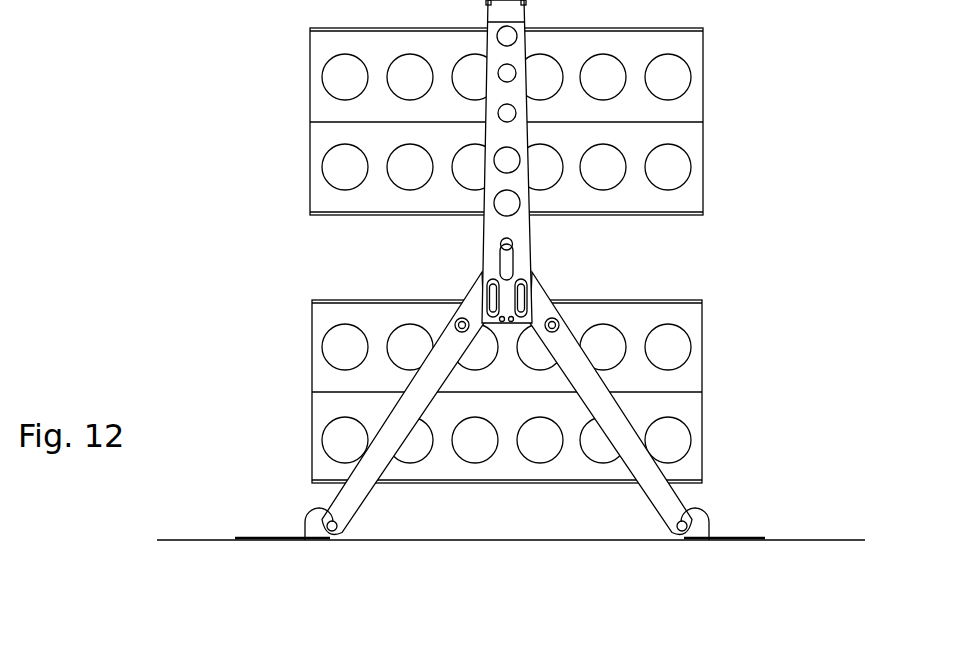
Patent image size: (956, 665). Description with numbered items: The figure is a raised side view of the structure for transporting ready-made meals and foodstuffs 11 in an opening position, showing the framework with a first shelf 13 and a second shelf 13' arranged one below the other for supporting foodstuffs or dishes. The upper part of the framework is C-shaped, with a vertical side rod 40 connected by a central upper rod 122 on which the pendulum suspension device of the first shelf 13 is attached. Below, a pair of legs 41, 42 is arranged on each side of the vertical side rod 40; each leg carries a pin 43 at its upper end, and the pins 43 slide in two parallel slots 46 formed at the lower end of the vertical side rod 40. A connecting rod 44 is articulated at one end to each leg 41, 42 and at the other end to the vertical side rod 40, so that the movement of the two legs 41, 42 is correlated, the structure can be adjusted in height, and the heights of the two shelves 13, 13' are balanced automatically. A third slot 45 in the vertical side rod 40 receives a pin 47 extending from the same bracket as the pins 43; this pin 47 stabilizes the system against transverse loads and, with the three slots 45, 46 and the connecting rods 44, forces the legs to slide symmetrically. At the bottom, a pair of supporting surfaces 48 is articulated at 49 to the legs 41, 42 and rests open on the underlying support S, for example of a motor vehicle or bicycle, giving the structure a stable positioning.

The structure for transporting ready-made meals and foodstuffs 11 is at (768, 270).
The shelf 13 is at (555, 121).
The second shelf 13' is at (569, 391).
The vertical side rod 40 is at (498, 132).
The leg 41 is at (353, 492).
The leg 42 is at (633, 468).
The pin 43 is at (488, 300).
The connecting rod 44 is at (478, 329).
The third slot 45 is at (500, 262).
The slot 46 is at (490, 287).
The pin 47 is at (510, 245).
The supporting surface 48 is at (253, 537).
The articulation 49 is at (332, 527).
The central upper rod 122 is at (511, 11).
The support S is at (518, 521).